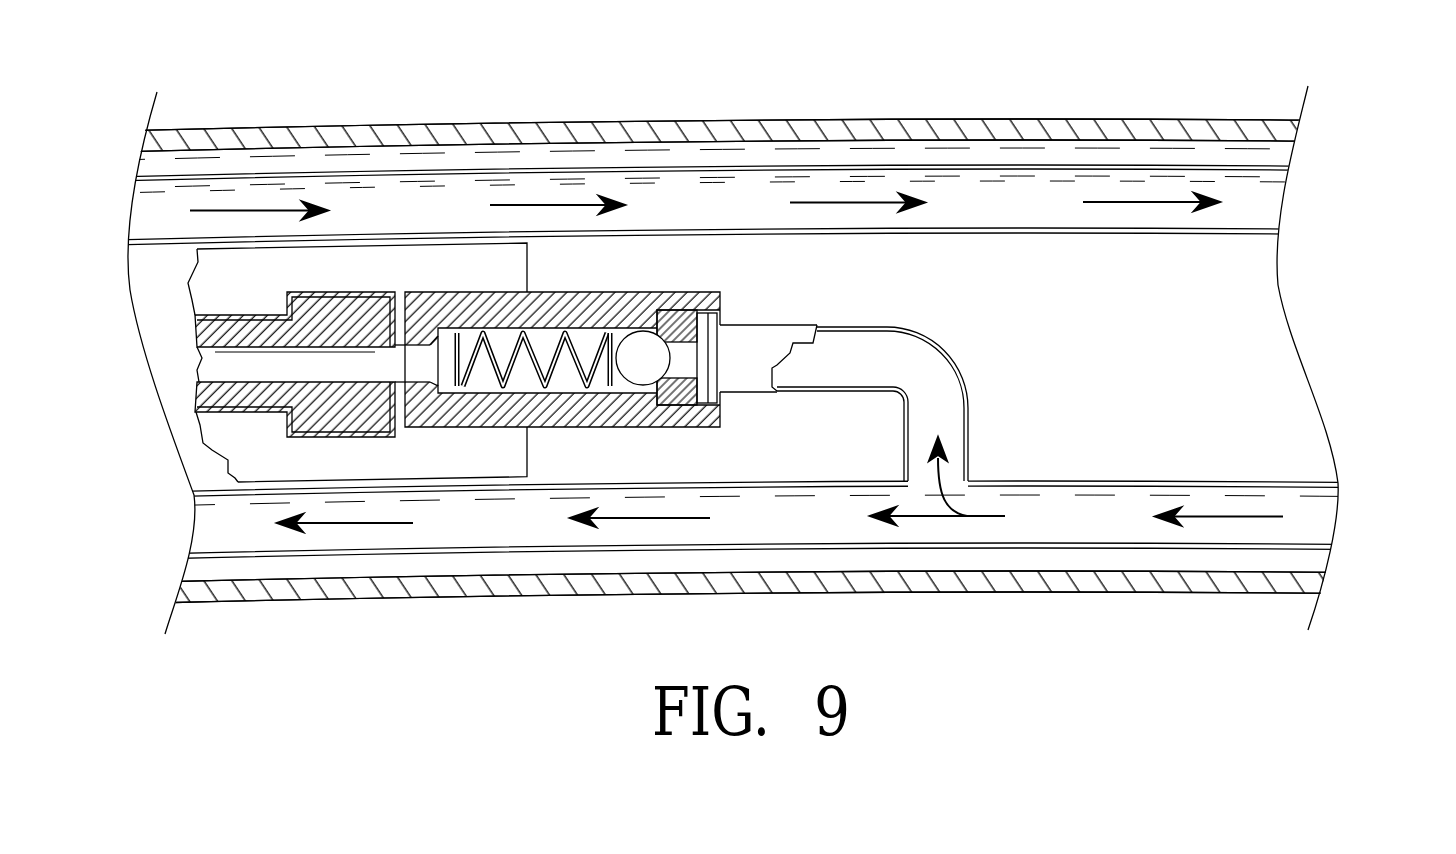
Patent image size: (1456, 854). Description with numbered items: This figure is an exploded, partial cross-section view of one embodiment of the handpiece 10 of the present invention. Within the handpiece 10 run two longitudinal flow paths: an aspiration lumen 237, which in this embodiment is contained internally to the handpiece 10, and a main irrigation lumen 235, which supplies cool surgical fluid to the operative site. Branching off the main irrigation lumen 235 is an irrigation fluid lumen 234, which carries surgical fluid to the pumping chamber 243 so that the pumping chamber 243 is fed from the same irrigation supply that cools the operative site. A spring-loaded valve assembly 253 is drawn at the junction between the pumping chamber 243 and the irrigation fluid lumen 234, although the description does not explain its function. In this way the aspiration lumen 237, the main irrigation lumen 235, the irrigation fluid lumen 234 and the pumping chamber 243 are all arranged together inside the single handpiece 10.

The handpiece 10 is at (676, 104).
The aspiration lumen 237 is at (1265, 196).
The main irrigation lumen 235 is at (1325, 521).
The pumping chamber 243 is at (210, 330).
The check valve housing 253 is at (670, 288).
The irrigation fluid lumen 234 is at (973, 418).